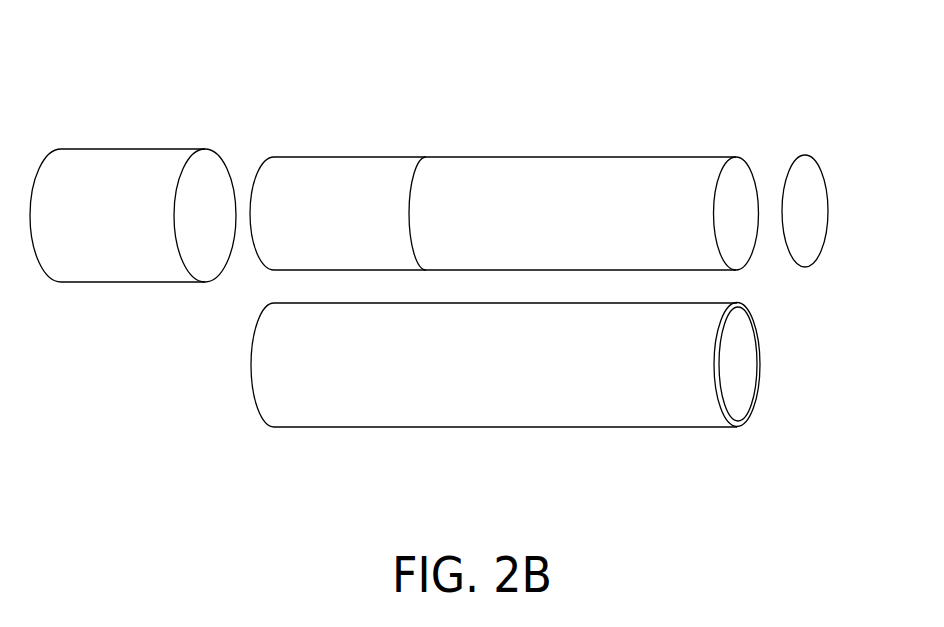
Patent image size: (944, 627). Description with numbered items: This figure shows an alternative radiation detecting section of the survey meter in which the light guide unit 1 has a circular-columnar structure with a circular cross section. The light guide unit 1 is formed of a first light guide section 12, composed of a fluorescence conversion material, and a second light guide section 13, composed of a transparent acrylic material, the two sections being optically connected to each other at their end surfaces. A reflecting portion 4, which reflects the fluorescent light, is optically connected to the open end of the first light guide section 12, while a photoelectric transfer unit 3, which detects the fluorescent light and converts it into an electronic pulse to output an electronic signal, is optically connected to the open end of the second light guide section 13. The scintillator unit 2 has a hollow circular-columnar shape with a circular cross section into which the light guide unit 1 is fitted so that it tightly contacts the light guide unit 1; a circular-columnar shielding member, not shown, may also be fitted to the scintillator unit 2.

The light guide unit 1 is at (652, 126).
The scintillator unit 2 is at (331, 415).
The photoelectric transfer unit 3 is at (120, 148).
The reflecting portion 4 is at (810, 175).
The first light guide section 12 is at (598, 175).
The second light guide section 13 is at (341, 173).